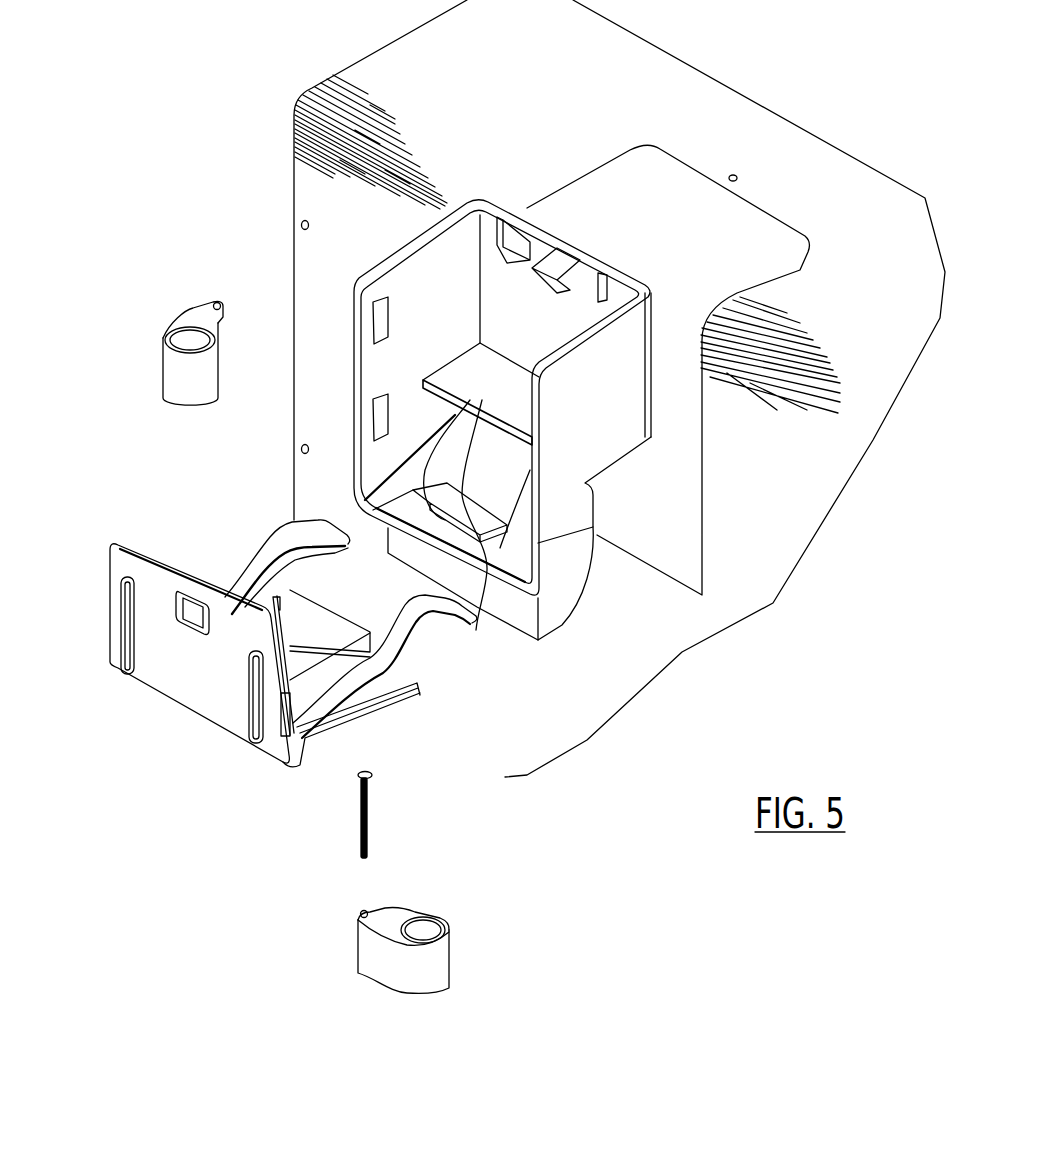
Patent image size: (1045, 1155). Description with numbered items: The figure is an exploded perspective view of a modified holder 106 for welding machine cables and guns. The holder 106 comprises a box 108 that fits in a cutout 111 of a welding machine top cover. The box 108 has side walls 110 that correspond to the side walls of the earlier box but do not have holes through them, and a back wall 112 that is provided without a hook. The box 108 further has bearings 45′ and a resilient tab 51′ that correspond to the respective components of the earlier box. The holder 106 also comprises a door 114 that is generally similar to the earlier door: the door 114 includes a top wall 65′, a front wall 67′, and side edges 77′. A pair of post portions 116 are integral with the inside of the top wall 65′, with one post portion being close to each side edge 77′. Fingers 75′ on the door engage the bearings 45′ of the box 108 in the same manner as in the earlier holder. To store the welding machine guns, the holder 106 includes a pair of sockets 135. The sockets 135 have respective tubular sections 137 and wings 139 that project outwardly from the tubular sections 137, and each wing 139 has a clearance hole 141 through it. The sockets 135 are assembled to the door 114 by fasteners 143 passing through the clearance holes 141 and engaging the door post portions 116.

The box 108 is at (440, 425).
The side walls 110 is at (457, 337).
The cutout 111 is at (703, 180).
The back wall 112 is at (557, 344).
The resilient tab 51′ is at (481, 412).
The bearings 45′ is at (484, 630).
The holder 106 is at (331, 687).
The door 114 is at (331, 644).
The top wall 65′ is at (204, 685).
The fingers 75′ is at (322, 510).
The side edges 77′ is at (410, 703).
The front wall 67′ is at (385, 722).
The post portions 116 is at (308, 769).
The fasteners 143 is at (370, 827).
The sockets 135 is at (322, 657).
The tubular sections 137 is at (178, 363).
The wings 139 is at (225, 322).
The clearance hole 141 is at (363, 913).